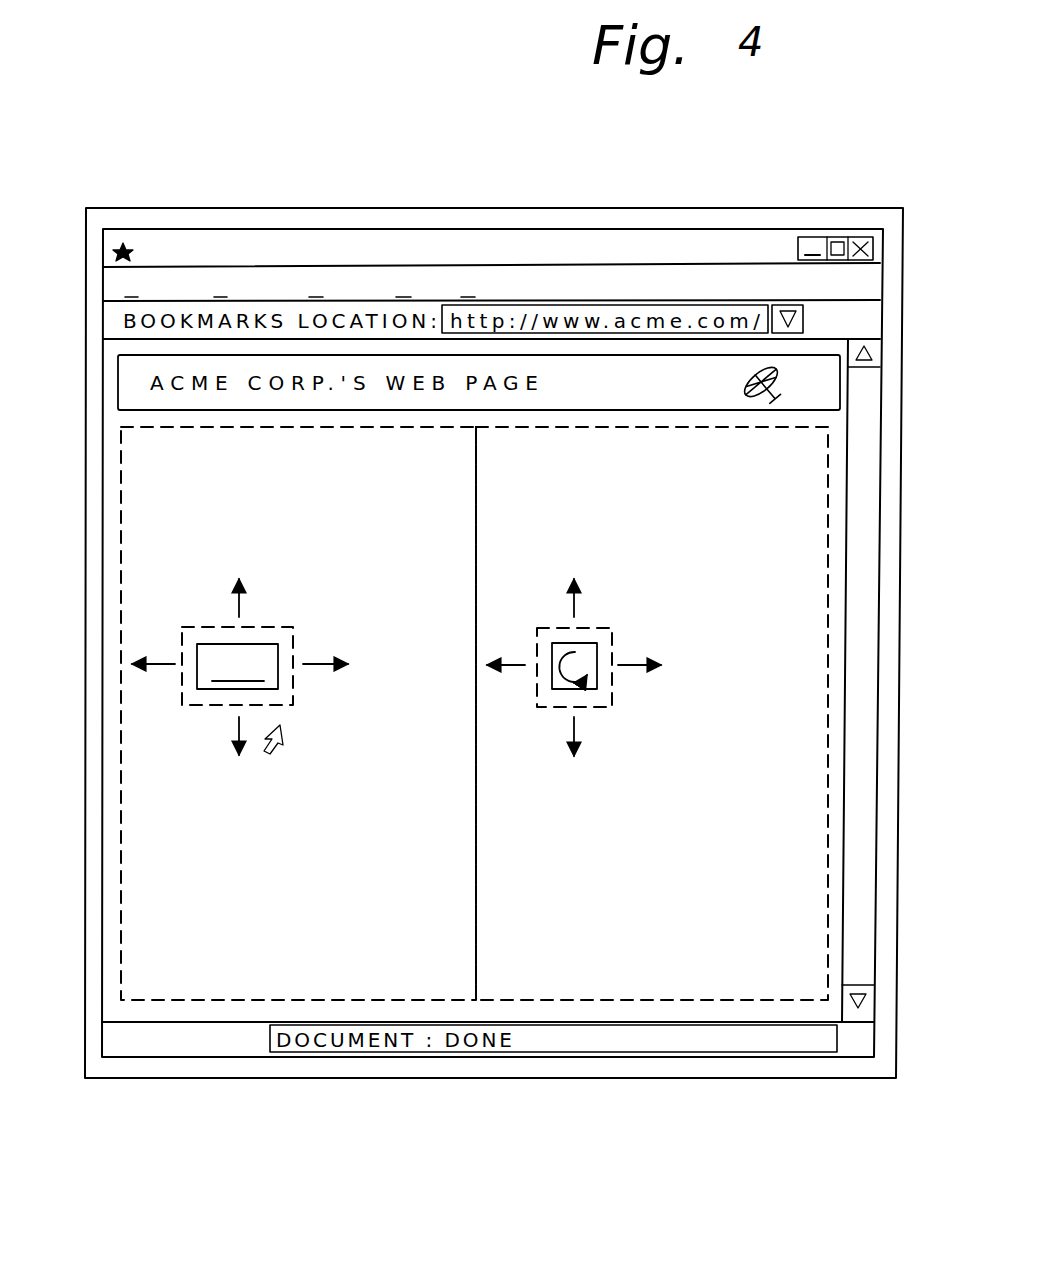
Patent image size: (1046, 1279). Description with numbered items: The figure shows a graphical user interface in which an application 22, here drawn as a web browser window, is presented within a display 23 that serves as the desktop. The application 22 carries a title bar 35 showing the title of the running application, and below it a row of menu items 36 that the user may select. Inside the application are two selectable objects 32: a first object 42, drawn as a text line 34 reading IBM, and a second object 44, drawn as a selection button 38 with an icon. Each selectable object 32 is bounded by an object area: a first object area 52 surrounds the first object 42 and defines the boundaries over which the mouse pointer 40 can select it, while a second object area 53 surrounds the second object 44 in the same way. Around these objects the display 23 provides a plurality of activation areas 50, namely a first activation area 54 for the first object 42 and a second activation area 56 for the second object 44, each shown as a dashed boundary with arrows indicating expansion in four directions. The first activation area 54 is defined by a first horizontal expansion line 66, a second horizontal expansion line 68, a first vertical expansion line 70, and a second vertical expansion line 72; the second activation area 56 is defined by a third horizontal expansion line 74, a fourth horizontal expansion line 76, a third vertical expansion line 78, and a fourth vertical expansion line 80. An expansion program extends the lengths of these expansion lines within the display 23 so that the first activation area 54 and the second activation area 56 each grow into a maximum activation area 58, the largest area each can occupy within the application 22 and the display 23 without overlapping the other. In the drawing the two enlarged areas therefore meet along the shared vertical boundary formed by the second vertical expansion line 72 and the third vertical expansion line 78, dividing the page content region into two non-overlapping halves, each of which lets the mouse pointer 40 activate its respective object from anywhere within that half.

The application 22 is at (722, 208).
The display 23 is at (80, 918).
The selectable object 32 is at (215, 667).
The text line 34 is at (198, 618).
The title bar 35 is at (518, 240).
The menu items 36 is at (112, 284).
The selection button 38 is at (605, 720).
The mouse pointer 40 is at (274, 755).
The first object 42 is at (223, 681).
The second object 44 is at (573, 652).
The activation areas 50 is at (237, 706).
The first object area 52 is at (197, 653).
The second object area 53 is at (597, 652).
The first activation area 54 is at (258, 1000).
The second activation area 56 is at (730, 1000).
The maximum activation area 58 is at (298, 800).
The first horizontal expansion line 66 is at (163, 1000).
The second horizontal expansion line 68 is at (360, 427).
The first vertical expansion line 70 is at (121, 468).
The second vertical expansion line 72 is at (480, 460).
The third horizontal expansion line 74 is at (610, 1000).
The fourth horizontal expansion line 76 is at (683, 427).
The third vertical expansion line 78 is at (588, 572).
The fourth vertical expansion line 80 is at (830, 473).